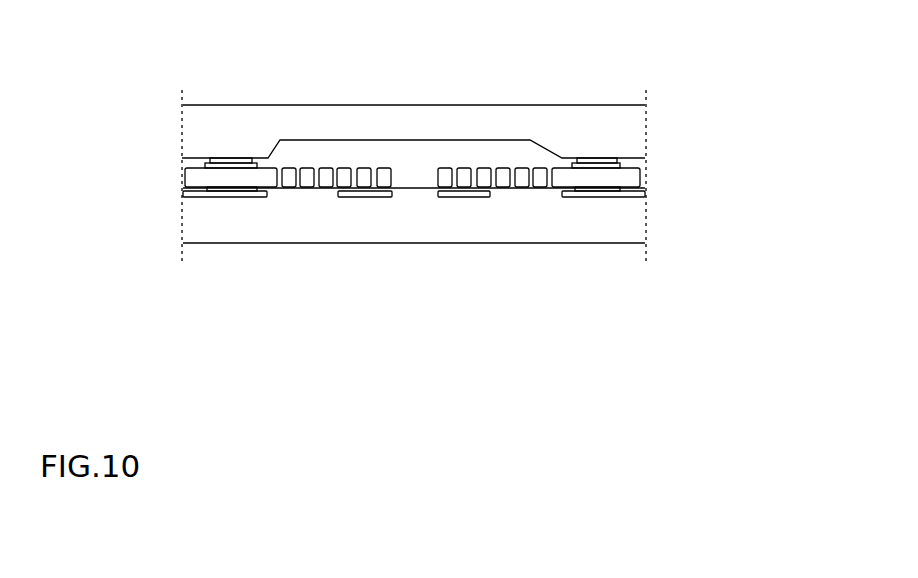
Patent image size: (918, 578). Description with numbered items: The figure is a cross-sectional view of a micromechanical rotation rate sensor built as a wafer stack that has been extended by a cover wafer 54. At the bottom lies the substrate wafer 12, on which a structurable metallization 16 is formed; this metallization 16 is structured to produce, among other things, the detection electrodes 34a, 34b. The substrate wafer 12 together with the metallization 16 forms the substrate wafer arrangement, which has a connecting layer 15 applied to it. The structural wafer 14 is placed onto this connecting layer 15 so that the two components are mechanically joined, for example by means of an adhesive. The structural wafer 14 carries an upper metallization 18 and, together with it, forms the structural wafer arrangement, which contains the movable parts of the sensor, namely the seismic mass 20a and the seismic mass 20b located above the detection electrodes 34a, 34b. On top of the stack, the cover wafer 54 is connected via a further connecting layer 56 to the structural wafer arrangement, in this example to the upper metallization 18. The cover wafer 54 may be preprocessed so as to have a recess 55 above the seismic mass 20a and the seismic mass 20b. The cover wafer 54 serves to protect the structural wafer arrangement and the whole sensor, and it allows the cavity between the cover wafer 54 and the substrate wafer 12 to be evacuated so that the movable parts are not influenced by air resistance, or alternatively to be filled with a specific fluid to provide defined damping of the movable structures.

The substrate wafer 12 is at (628, 220).
The structural wafer 14 is at (640, 177).
The connecting layer 15 is at (590, 191).
The metallization 16 is at (646, 193).
The metallization 18 is at (608, 160).
The seismic mass 20a is at (345, 168).
The seismic mass 20b is at (448, 168).
The detection electrode 34a is at (364, 197).
The detection electrode 34b is at (465, 197).
The cover wafer 54 is at (537, 105).
The recess 55 is at (300, 133).
The further connecting layer 56 is at (584, 158).